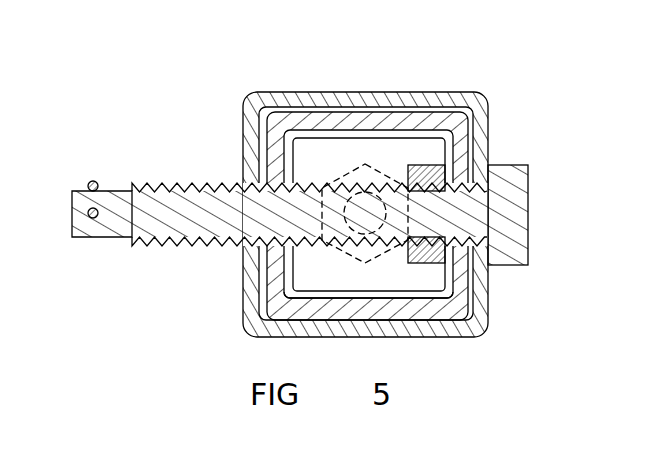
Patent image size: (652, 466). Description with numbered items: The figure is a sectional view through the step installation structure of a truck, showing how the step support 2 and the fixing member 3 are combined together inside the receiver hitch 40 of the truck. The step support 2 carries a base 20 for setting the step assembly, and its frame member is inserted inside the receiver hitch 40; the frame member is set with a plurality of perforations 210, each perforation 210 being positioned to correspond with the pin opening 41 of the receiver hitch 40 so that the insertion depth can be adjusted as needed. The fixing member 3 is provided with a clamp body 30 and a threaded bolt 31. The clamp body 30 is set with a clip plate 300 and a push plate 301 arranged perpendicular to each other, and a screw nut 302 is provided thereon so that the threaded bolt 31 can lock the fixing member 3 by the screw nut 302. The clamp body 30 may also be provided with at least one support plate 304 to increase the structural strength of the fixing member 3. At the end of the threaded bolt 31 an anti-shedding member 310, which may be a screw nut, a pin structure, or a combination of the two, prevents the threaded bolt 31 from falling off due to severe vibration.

The step support 2 is at (270, 105).
The fixing member 3 is at (317, 140).
The base 20 is at (360, 128).
The clamp body 30 is at (393, 143).
The threaded bolt 31 is at (530, 195).
The receiver hitch 40 is at (477, 95).
The pin opening 41 is at (242, 249).
The perforations 210 is at (267, 177).
The clip plate 300 is at (466, 272).
The push plate 301 is at (340, 152).
The screw nut 302 is at (427, 163).
The support plate 304 is at (284, 263).
The anti-shedding member 310 is at (92, 181).